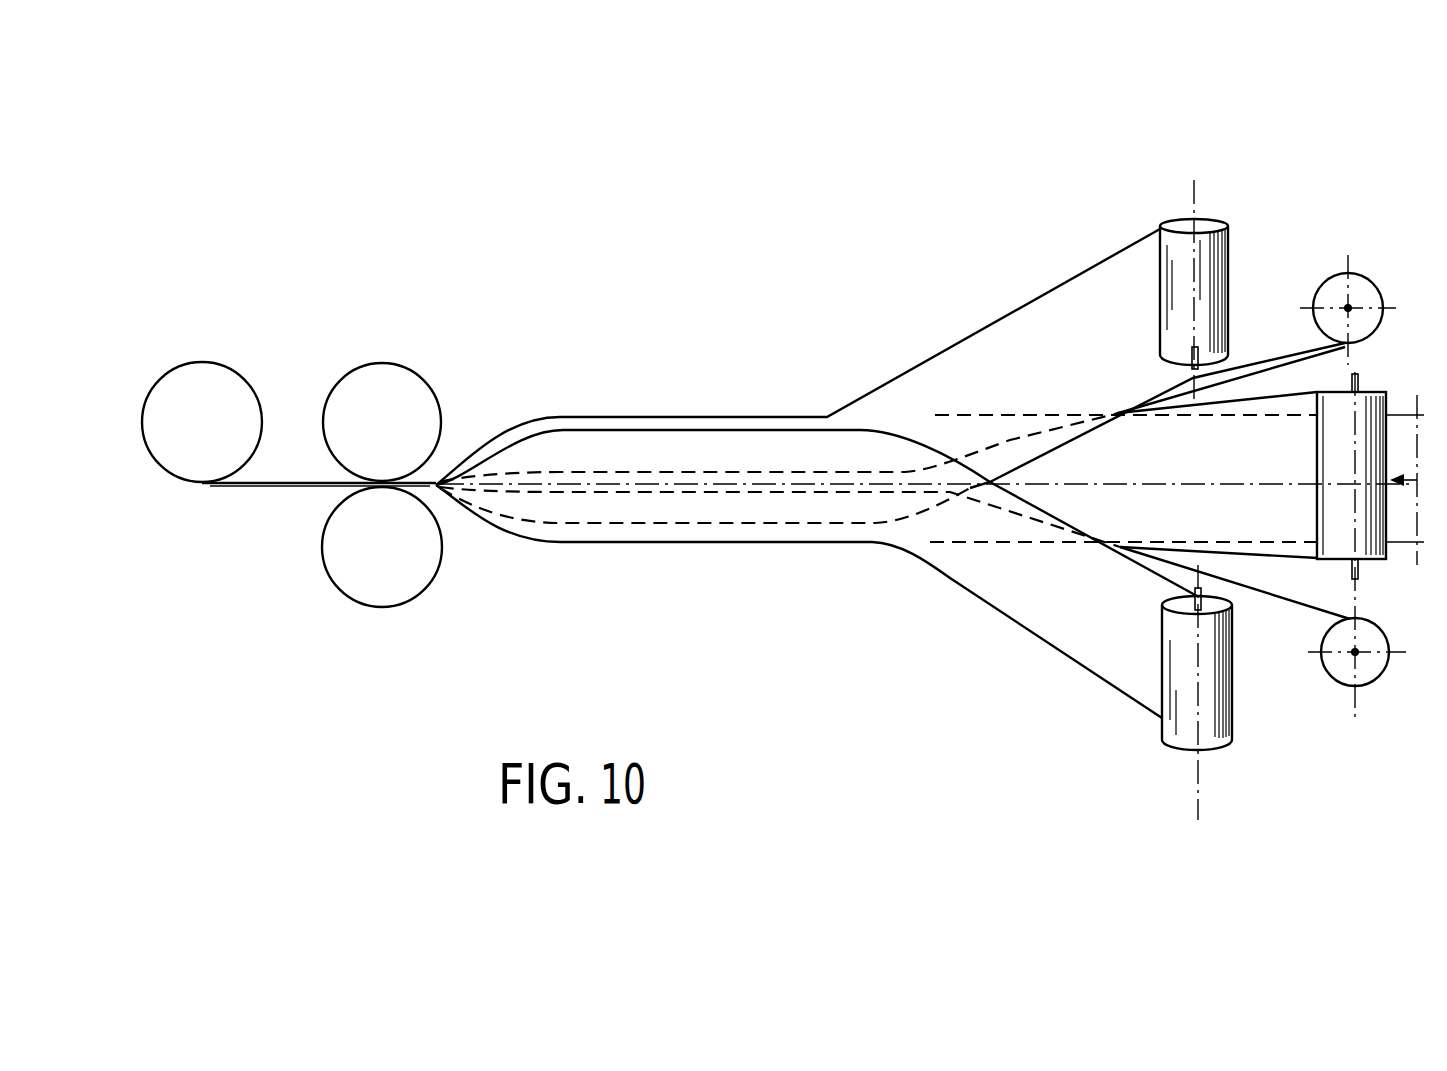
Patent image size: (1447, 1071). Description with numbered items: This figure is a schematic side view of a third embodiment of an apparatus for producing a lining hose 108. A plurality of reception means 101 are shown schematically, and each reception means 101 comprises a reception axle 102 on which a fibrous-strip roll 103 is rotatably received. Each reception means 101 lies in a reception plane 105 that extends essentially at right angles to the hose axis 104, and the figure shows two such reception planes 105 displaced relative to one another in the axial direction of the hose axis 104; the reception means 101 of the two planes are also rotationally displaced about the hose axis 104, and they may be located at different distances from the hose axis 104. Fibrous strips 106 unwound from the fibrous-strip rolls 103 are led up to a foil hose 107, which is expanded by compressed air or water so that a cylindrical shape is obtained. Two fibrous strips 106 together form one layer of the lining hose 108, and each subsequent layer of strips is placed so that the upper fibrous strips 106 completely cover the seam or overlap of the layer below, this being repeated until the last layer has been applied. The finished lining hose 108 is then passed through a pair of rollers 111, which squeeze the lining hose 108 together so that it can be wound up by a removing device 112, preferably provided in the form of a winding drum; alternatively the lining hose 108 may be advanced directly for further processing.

The reception means 101 is at (1243, 210).
The reception axle 102 is at (1166, 350).
The fibrous-strip roll 103 is at (1238, 284).
The hose axis 104 is at (1241, 490).
The reception plane 105 is at (1203, 800).
The fibrous strip 106 is at (975, 376).
The foil hose 107 is at (1401, 523).
The lining hose 108 is at (280, 493).
The pair of rollers 111 is at (390, 361).
The removing device 112 is at (215, 361).